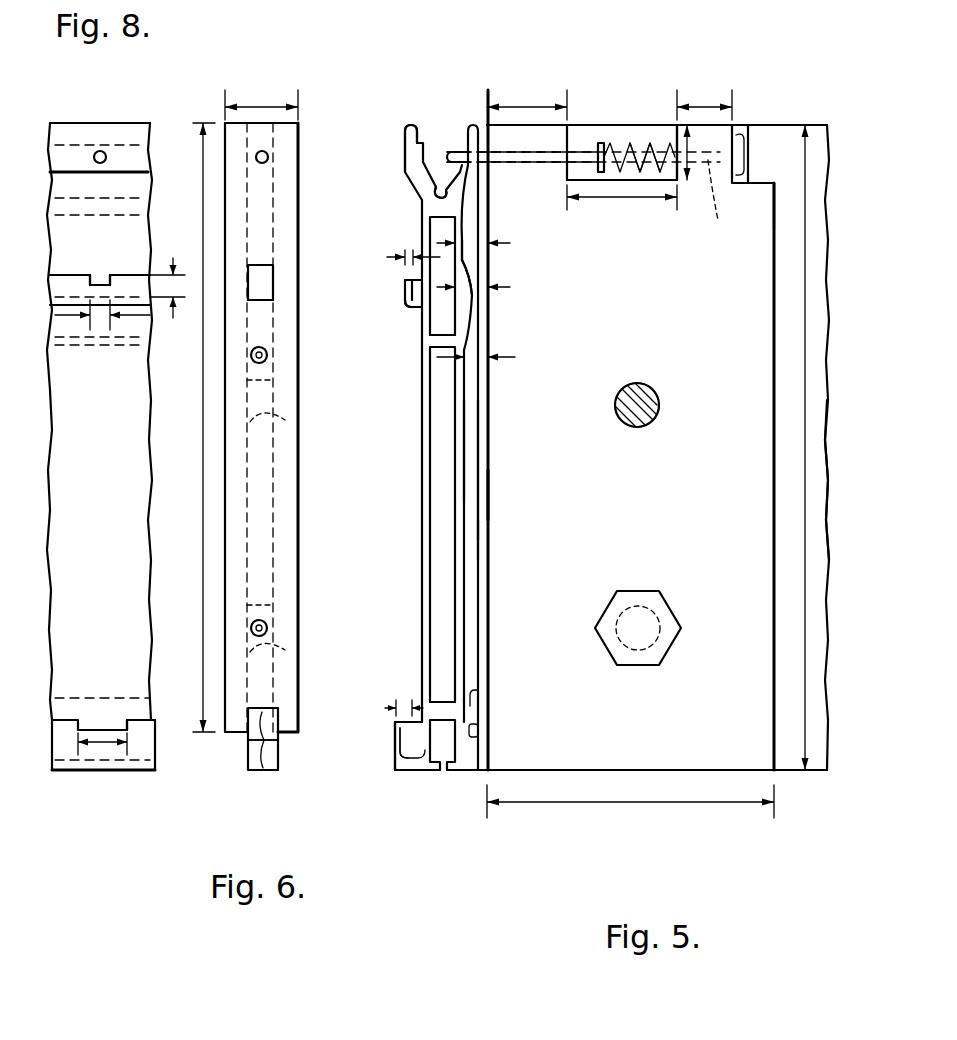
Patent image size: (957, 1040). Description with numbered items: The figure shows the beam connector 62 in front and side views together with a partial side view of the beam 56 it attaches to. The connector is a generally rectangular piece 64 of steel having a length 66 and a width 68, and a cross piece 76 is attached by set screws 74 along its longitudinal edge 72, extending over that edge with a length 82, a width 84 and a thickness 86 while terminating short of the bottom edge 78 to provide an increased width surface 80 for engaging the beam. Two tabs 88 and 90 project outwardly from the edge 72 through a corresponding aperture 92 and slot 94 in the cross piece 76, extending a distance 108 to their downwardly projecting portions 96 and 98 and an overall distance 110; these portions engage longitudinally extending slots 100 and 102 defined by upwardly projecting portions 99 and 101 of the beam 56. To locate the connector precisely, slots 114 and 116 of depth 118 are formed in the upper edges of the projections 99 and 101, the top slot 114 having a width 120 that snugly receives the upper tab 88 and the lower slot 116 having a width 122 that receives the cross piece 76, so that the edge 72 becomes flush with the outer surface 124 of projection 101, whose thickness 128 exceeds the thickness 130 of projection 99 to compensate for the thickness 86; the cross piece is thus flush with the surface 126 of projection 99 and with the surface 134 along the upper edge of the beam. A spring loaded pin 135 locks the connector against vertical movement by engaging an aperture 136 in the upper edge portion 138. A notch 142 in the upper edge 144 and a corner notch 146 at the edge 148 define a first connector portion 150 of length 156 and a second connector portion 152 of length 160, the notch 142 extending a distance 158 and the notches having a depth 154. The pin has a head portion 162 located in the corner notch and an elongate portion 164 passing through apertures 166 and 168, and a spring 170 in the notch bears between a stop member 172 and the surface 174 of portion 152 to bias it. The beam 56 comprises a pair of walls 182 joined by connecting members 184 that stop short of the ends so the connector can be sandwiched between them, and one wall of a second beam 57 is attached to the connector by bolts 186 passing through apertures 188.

In FIG. 8, the beam 56 is at (150, 250).
In FIG. 5, the beam 56 is at (422, 400).
In FIG. 5, the second beam 57 is at (815, 643).
In FIG. 5, the beam connector 62 is at (774, 268).
In FIG. 5, the rectangular piece 64 is at (541, 213).
In FIG. 5, the length 66 is at (805, 447).
In FIG. 5, the width 68 is at (605, 802).
In FIG. 5, the longitudinal edge 72 is at (486, 495).
In FIG. 6, the set screws 74 is at (270, 360).
In FIG. 5, the cross piece 76 is at (478, 465).
In FIG. 5, the bottom edge 78 is at (660, 770).
In FIG. 5, the increased width surface 80 is at (478, 535).
In FIG. 6, the length of cross piece 82 is at (203, 152).
In FIG. 6, the width of cross piece 84 is at (262, 107).
In FIG. 5, the thickness of cross piece 86 is at (512, 357).
In FIG. 5, the upper tab 88 is at (464, 262).
In FIG. 5, the lower tab 90 is at (478, 700).
In FIG. 6, the aperture 92 is at (275, 285).
In FIG. 6, the slot 94 is at (258, 772).
In FIG. 6, the downwardly projecting portion of upper tab 96 is at (270, 302).
In FIG. 5, the downwardly projecting portion of upper tab 96 is at (473, 302).
In FIG. 6, the downwardly projecting portion of lower tab 98 is at (272, 770).
In FIG. 5, the downwardly projecting portion of lower tab 98 is at (478, 735).
In FIG. 8, the upper projection 99 is at (120, 284).
In FIG. 5, the upper projection 99 is at (405, 283).
In FIG. 5, the upper longitudinal slot 100 is at (415, 316).
In FIG. 8, the lower projection 101 is at (138, 725).
In FIG. 5, the lower projection 101 is at (400, 722).
In FIG. 5, the lower longitudinal slot 102 is at (415, 752).
In FIG. 5, the tab extension distance 108 is at (510, 287).
In FIG. 5, the overall tab extension distance 110 is at (510, 243).
In FIG. 8, the top slot 114 is at (88, 280).
In FIG. 8, the lower slot 116 is at (88, 720).
In FIG. 8, the slot depth 118 is at (175, 303).
In FIG. 8, the top slot width 120 is at (100, 322).
In FIG. 8, the lower slot width 122 is at (100, 772).
In FIG. 5, the outer surface of projection 101 124 is at (400, 740).
In FIG. 5, the surface of projection 99 126 is at (406, 298).
In FIG. 5, the thickness of projection 101 128 is at (398, 700).
In FIG. 5, the thickness of projection 99 130 is at (392, 255).
In FIG. 8, the upper edge surface 134 is at (125, 125).
In FIG. 5, the upper edge surface 134 is at (405, 140).
In FIG. 6, the spring loaded pin 135 is at (270, 150).
In FIG. 5, the spring loaded pin 135 is at (748, 150).
In FIG. 8, the aperture in beam 136 is at (100, 150).
In FIG. 5, the aperture in beam 136 is at (447, 157).
In FIG. 5, the upper edge portion 138 is at (462, 125).
In FIG. 5, the notch 142 is at (585, 160).
In FIG. 5, the upper edge 144 is at (700, 107).
In FIG. 5, the corner notch 146 is at (757, 175).
In FIG. 5, the opposite edge 148 is at (774, 365).
In FIG. 5, the first connector portion 150 is at (520, 125).
In FIG. 5, the second connector portion 152 is at (710, 150).
In FIG. 5, the notch depth 154 is at (700, 171).
In FIG. 5, the length of first connector portion 156 is at (510, 107).
In FIG. 5, the notch length 158 is at (620, 197).
In FIG. 5, the length of second connector portion 160 is at (703, 140).
In FIG. 5, the head portion 162 is at (757, 200).
In FIG. 5, the elongate pin portion 164 is at (600, 142).
In FIG. 5, the aperture in portion 152 166 is at (718, 220).
In FIG. 6, the aperture in portion 150 168 is at (268, 160).
In FIG. 5, the aperture in portion 150 168 is at (548, 156).
In FIG. 5, the spring 170 is at (630, 148).
In FIG. 5, the stop member 172 is at (598, 180).
In FIG. 5, the surface of portion 152 174 is at (660, 150).
In FIG. 5, the walls 182 is at (818, 512).
In FIG. 8, the connecting members 184 is at (125, 200).
In FIG. 5, the connecting members 184 is at (437, 190).
In FIG. 5, the bolts 186 is at (635, 425).
In FIG. 6, the apertures in connector 188 is at (286, 420).
In FIG. 5, the apertures in connector 188 is at (640, 385).